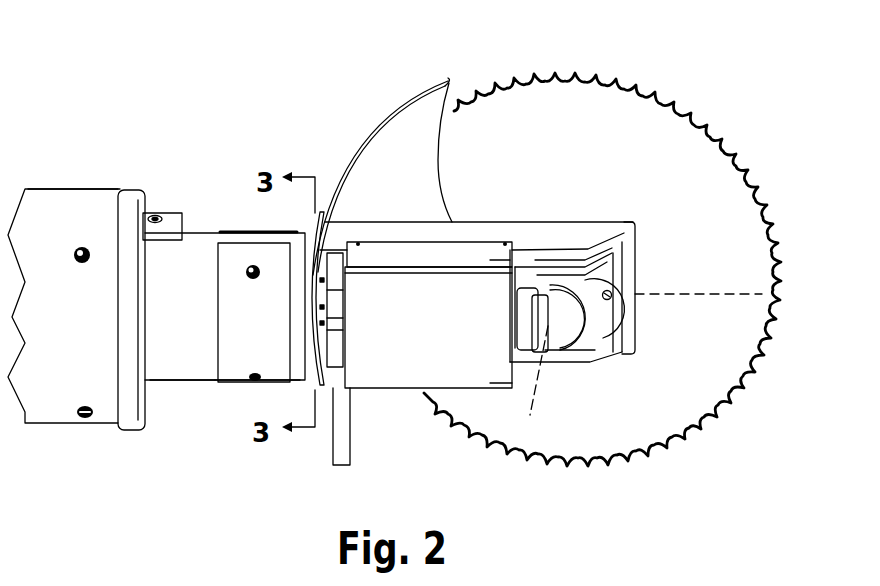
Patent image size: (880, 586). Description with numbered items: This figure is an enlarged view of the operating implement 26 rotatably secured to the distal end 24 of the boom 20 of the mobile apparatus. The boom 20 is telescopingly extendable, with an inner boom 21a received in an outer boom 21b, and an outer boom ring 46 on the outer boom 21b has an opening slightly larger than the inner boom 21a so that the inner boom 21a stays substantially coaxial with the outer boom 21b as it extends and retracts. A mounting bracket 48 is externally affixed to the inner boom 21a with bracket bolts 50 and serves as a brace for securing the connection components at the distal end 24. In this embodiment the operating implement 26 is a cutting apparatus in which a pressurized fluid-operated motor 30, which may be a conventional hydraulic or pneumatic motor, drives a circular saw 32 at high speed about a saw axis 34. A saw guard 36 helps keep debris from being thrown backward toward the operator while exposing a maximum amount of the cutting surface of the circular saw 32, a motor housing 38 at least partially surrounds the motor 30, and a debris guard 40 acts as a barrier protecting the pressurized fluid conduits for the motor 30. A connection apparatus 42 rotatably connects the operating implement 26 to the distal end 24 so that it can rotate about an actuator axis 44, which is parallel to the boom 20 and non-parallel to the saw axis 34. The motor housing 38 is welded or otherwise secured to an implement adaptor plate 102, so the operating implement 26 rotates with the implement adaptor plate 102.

The boom 20 is at (57, 184).
The inner boom 21a is at (175, 373).
The outer boom 21b is at (92, 197).
The distal end 24 is at (195, 232).
The operating implement 26 is at (428, 443).
The pressurized fluid-operated motor 30 is at (572, 353).
The circular saw 32 is at (575, 92).
The saw axis 34 is at (537, 400).
The saw guard 36 is at (425, 87).
The motor housing 38 is at (593, 232).
The debris guard 40 is at (375, 390).
The connection apparatus 42 is at (232, 400).
The actuator axis 44 is at (708, 292).
The outer boom ring 46 is at (133, 203).
The mounting bracket 48 is at (235, 300).
The bracket bolts 50 is at (254, 264).
The implement adaptor plate 102 is at (327, 213).